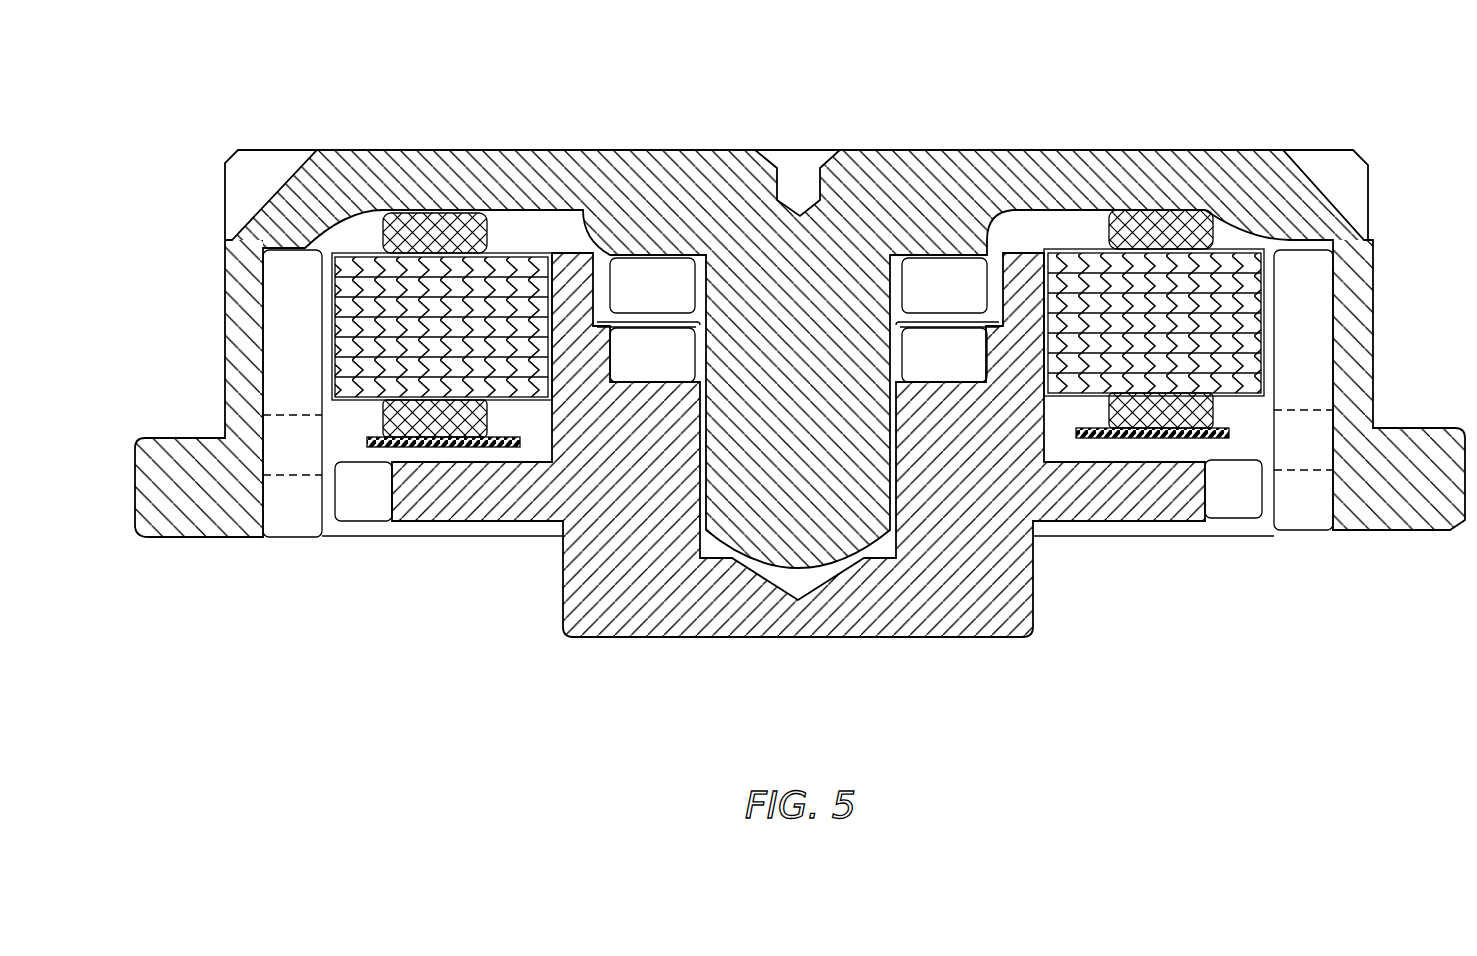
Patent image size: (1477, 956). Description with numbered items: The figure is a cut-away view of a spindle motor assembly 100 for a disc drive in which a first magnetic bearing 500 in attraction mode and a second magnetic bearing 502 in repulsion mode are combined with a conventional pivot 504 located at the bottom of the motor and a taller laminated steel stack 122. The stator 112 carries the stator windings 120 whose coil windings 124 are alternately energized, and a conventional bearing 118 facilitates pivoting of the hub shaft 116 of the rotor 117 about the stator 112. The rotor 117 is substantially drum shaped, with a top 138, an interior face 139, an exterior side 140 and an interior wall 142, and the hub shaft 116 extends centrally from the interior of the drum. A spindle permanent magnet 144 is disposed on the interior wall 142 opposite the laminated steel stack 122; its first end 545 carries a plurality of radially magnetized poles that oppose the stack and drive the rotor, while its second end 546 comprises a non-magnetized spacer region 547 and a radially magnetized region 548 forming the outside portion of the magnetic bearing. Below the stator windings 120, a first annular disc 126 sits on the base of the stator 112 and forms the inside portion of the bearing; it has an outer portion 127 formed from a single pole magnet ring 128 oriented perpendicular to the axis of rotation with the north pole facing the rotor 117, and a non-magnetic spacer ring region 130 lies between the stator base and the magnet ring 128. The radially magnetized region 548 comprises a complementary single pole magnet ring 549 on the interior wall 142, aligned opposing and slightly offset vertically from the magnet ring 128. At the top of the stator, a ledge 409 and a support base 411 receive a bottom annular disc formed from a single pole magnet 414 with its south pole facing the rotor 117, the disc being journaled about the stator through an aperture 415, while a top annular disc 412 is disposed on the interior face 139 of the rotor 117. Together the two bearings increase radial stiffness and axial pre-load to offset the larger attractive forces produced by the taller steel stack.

The spindle motor assembly 100 is at (833, 743).
The stator 112 is at (997, 557).
The hub shaft 116 is at (813, 527).
The rotor 117 is at (273, 202).
The conventional bearing 118 is at (735, 567).
The stator windings 120 is at (1260, 247).
The laminated steel stack 122 is at (1263, 277).
The coil windings 124 is at (1183, 225).
The first annular disc 126 is at (1180, 527).
The outer portion 127 is at (375, 505).
The single pole magnet ring 128 is at (365, 500).
The non-magnetic spacer ring region 130 is at (1122, 498).
The top 138 is at (1053, 148).
The interior face 139 is at (1127, 205).
The exterior side 140 is at (1375, 348).
The interior wall 142 is at (1333, 327).
The spindle permanent magnet 144 is at (1308, 393).
The ledge 409 is at (605, 368).
The support base 411 is at (637, 382).
The top annular disc 412 is at (938, 257).
The single pole magnet 414 is at (652, 363).
The aperture 415 is at (697, 263).
The first magnetic bearing 500 is at (328, 525).
The second magnetic bearing 502 is at (640, 322).
The conventional pivot 504 is at (800, 600).
The first end 545 is at (1337, 245).
The second end 546 is at (1305, 532).
The non-magnetized spacer region 547 is at (1310, 440).
The radially magnetized region 548 is at (292, 538).
The complementary single pole magnet ring 549 is at (286, 540).